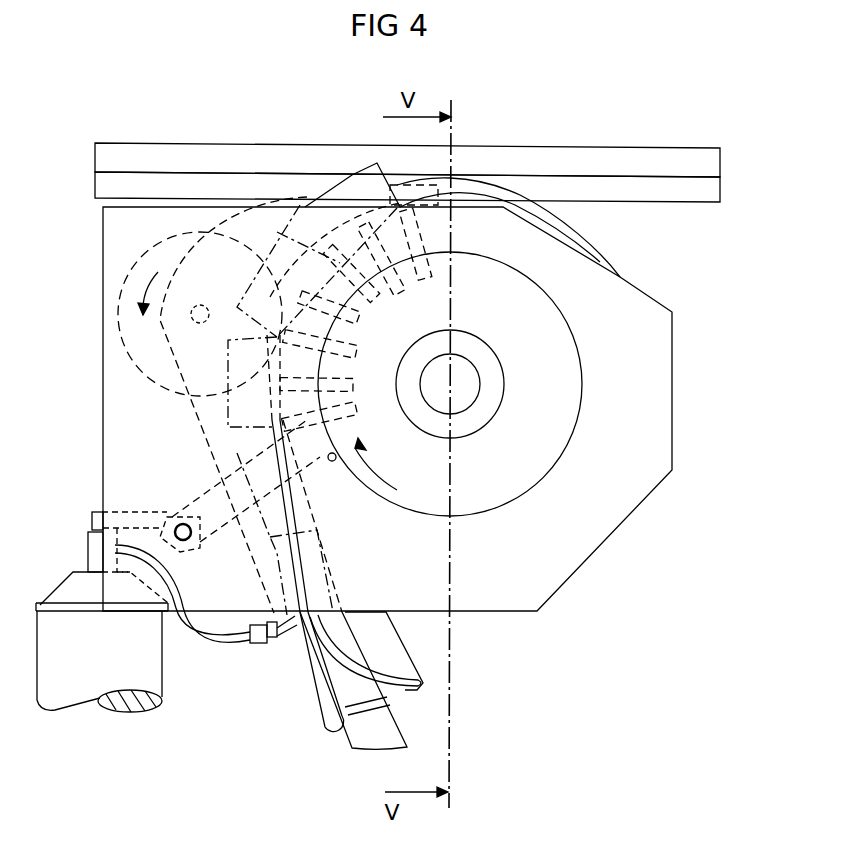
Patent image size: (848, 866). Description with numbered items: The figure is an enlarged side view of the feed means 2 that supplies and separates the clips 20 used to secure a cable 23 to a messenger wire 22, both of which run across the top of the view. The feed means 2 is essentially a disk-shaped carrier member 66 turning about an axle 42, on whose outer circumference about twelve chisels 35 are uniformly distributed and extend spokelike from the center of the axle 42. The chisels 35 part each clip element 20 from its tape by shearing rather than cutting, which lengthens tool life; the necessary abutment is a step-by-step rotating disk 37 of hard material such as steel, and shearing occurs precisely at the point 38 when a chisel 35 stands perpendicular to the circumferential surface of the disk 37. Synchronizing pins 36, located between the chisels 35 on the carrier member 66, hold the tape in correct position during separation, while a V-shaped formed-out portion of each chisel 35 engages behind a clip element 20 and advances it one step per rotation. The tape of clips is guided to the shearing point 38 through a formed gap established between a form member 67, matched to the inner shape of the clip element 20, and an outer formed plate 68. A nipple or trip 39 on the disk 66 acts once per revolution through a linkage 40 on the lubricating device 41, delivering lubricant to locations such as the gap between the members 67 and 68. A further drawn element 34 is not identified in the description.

The feed means 2 is at (603, 548).
The clip element 20 is at (390, 732).
The messenger wire 22 is at (643, 157).
The cable 23 is at (666, 196).
The guide plate 34 is at (580, 244).
The chisel 35 is at (437, 287).
The synchronizing pin 36 is at (420, 305).
The disk 37 is at (150, 367).
The point 38 is at (275, 333).
The nipple 39 is at (331, 462).
The linkage 40 is at (157, 518).
The lubricating device 41 is at (73, 572).
The axle 42 is at (470, 400).
The disk-shaped carrier member 66 is at (558, 328).
The form member 67 is at (330, 722).
The outer formed plate 68 is at (393, 648).